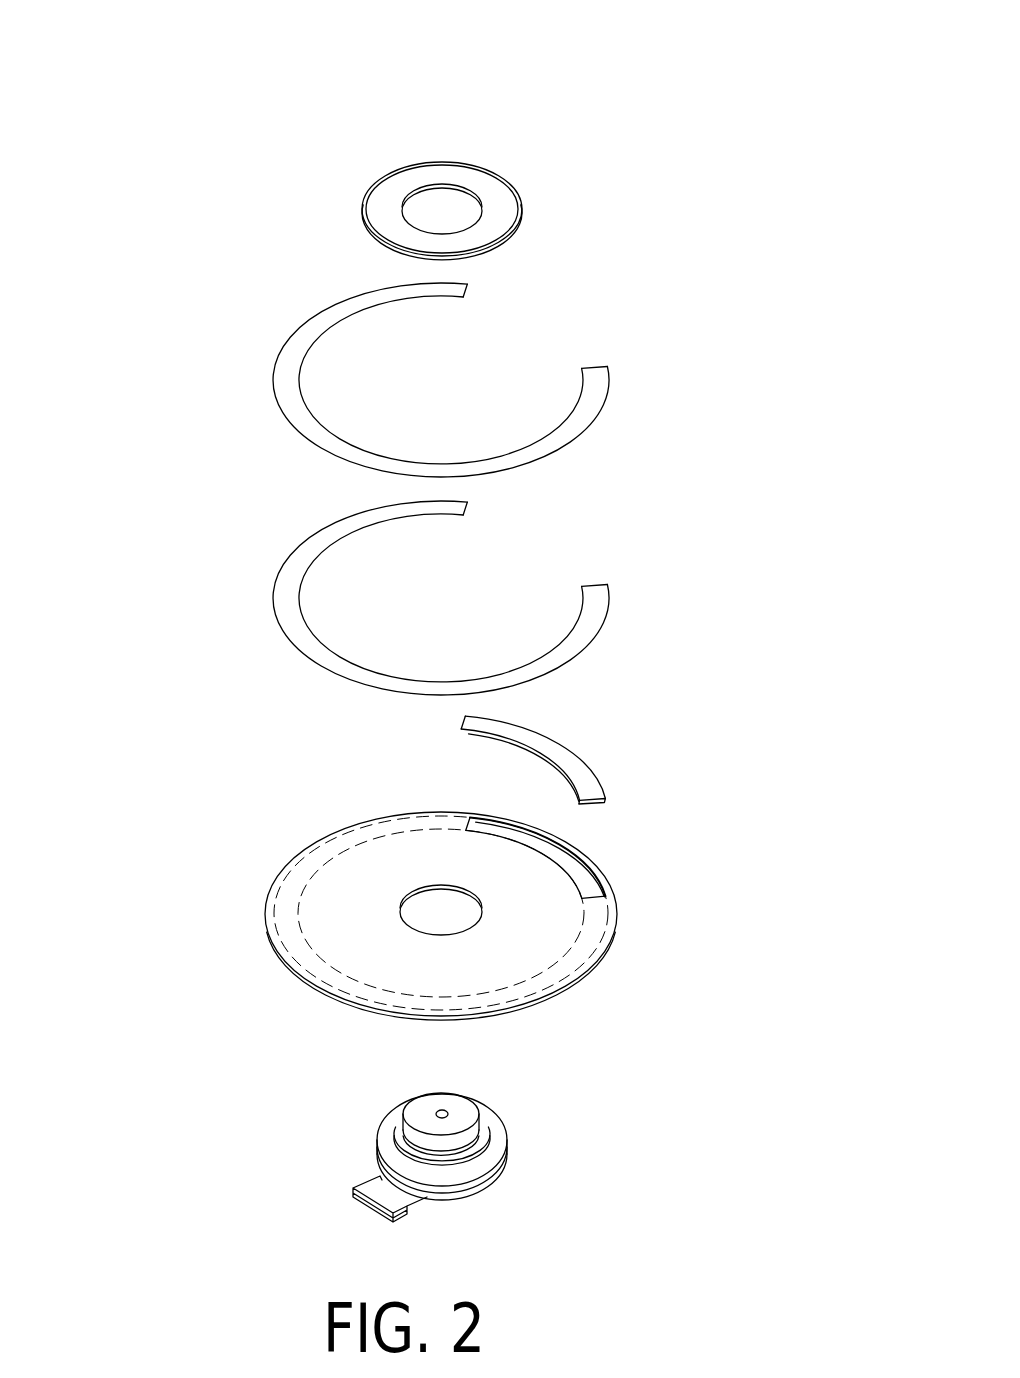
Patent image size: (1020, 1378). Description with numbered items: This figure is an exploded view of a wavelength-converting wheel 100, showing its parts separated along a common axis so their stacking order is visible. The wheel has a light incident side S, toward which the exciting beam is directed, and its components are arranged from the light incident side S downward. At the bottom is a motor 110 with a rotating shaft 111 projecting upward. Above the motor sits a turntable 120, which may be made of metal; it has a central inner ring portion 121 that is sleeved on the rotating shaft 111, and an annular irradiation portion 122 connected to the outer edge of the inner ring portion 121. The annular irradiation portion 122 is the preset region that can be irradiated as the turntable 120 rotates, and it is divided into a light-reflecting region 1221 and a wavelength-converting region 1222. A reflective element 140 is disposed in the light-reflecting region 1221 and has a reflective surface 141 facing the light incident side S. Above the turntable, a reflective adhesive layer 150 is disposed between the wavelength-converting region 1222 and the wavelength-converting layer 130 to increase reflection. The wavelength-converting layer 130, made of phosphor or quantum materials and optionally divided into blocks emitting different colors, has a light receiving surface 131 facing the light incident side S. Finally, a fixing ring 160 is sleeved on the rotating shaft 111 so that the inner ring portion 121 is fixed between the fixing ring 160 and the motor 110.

The wavelength-converting wheel 100 is at (200, 37).
The light incident side S is at (273, 212).
The fixing ring 160 is at (502, 208).
The wavelength-converting layer 130 is at (293, 404).
The light receiving surface 131 is at (283, 335).
The reflective adhesive layer 150 is at (288, 593).
The reflective element 140 is at (585, 780).
The reflective surface 141 is at (569, 743).
The turntable 120 is at (324, 1026).
The inner ring portion 121 is at (313, 973).
The annular irradiation portion 122 is at (268, 930).
The light-reflecting region 1221 is at (597, 868).
The wavelength-converting region 1222 is at (281, 882).
The motor 110 is at (483, 1177).
The rotating shaft 111 is at (463, 1113).